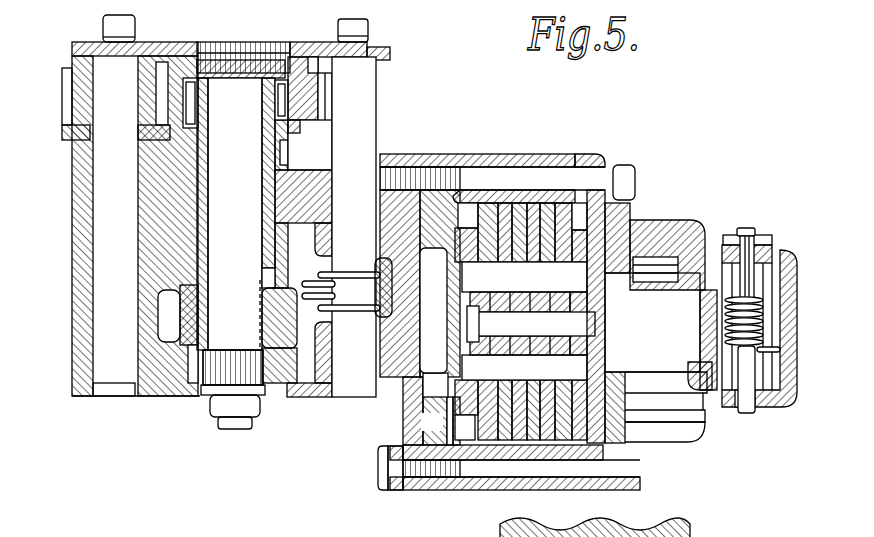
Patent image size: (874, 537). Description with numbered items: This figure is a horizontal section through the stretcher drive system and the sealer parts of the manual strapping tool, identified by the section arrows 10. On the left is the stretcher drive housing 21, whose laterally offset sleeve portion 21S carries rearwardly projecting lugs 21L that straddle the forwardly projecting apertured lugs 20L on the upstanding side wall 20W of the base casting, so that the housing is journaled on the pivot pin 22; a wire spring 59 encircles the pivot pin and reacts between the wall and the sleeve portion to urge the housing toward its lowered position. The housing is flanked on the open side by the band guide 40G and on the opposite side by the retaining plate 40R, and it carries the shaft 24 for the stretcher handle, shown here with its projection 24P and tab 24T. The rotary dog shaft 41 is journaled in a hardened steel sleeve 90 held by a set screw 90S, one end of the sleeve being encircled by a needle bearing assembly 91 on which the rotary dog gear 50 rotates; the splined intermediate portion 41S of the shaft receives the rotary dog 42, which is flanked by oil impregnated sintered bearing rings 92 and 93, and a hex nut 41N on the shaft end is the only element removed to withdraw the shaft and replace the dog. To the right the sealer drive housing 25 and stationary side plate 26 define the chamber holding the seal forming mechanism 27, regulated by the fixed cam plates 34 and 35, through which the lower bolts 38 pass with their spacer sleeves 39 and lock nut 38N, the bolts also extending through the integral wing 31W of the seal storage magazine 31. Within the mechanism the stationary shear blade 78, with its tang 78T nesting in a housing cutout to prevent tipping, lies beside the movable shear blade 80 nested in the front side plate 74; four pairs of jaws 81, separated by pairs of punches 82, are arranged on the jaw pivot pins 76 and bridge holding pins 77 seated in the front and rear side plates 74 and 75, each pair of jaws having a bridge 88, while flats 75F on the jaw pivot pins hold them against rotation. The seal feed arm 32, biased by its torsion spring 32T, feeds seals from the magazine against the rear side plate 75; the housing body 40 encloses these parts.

The section line 10 is at (492, 137).
The apertured lugs 20L is at (325, 333).
The upstanding side wall 20W is at (403, 385).
The stretcher drive housing 21 is at (150, 393).
The rearwardly projecting lugs 21L is at (316, 200).
The sleeve portion 21S is at (80, 260).
The pivot pin 22 is at (365, 92).
The shaft 24 is at (94, 190).
The sleeve projection 24P is at (73, 72).
The sleeve tab 24T is at (68, 97).
The sealer drive housing 25 is at (418, 494).
The stationary side plate 26 is at (657, 442).
The seal forming mechanism 27 is at (552, 198).
The seal storage magazine 31 is at (700, 442).
The integral wing 31W is at (645, 480).
The seal feed arm 32 is at (790, 320).
The torsion spring 32T is at (747, 297).
The cam plate 34 is at (470, 155).
The cam plate 35 is at (592, 158).
The lower bolts 38 is at (495, 180).
The lock nut 38N is at (390, 490).
The spacer sleeves 39 is at (515, 207).
The housing 40 is at (632, 213).
The band guide 40G is at (165, 395).
The retaining plate 40R is at (298, 46).
The rotary dog shaft 41 is at (241, 205).
The hex nut 41N is at (200, 412).
The splined intermediate portion 41S is at (205, 298).
The rotary dog 42 is at (170, 276).
The rotary dog gear 50 is at (183, 76).
The wire spring 59 is at (362, 275).
The front side plate 74 is at (464, 429).
The rear side plate 75 is at (628, 407).
The flats 75F is at (476, 280).
The jaw pivot pins 76 is at (553, 323).
The bridge holding pins 77 is at (532, 323).
The stationary shear blade 78 is at (433, 310).
The tang 78T is at (390, 279).
The movable shear blade 80 is at (420, 317).
The jaws 81 is at (644, 485).
The punches 82 is at (503, 326).
The bridge 88 is at (485, 324).
The hardened steel sleeve 90 is at (207, 177).
The set screw 90S is at (292, 165).
The needle bearing assembly 91 is at (205, 104).
The sintered bearing ring 92 is at (210, 250).
The sintered bearing ring 93 is at (197, 367).